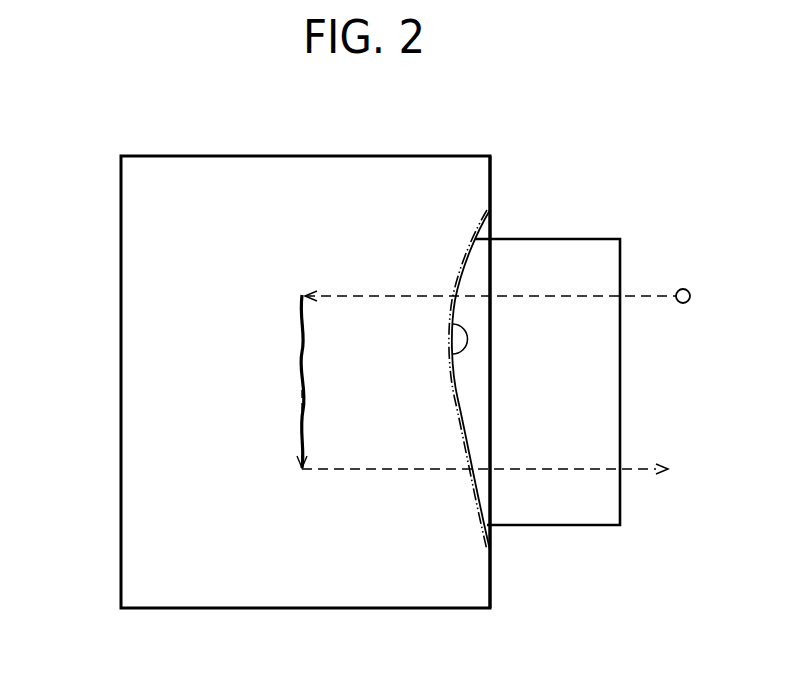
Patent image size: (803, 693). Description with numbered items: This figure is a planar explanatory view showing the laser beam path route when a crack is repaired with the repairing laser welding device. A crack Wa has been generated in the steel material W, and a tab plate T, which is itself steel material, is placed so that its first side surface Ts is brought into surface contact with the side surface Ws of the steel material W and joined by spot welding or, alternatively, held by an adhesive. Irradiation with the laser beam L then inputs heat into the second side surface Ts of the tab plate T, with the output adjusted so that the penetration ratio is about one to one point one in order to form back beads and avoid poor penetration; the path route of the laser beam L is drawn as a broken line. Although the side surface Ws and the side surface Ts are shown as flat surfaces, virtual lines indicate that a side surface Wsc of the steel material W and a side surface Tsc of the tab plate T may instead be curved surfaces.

The steel material W is at (147, 231).
The crack Wa is at (302, 352).
The side surface of the steel material Ws is at (492, 177).
The side surface of the steel material (curved) Wsc is at (448, 314).
The tab plate T is at (577, 253).
The side surface of the tab plate Ts is at (620, 353).
The side surface of the tab plate (curved) Tsc is at (460, 399).
The laser beam L is at (683, 286).